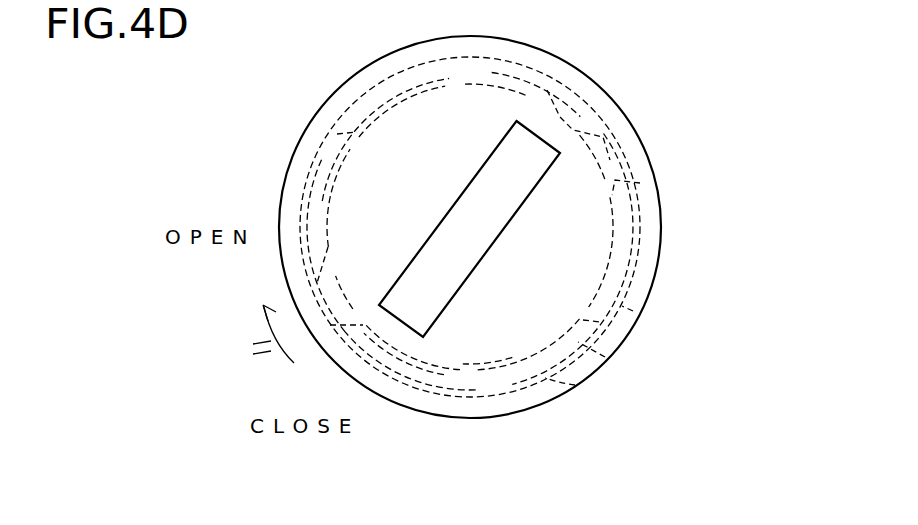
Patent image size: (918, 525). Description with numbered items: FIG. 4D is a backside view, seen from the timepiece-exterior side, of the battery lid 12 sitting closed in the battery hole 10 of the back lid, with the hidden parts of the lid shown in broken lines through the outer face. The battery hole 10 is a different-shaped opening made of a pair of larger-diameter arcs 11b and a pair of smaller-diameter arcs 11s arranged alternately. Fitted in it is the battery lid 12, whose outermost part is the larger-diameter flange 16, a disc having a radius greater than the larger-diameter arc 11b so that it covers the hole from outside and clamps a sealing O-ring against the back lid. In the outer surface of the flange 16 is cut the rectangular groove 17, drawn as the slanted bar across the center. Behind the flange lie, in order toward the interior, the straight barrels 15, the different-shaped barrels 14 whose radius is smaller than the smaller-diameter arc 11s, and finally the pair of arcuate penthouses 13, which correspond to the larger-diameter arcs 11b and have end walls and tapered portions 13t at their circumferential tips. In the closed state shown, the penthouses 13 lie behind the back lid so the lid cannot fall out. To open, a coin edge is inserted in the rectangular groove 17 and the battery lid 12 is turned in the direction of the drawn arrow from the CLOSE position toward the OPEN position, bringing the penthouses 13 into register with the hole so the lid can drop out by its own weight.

The battery hole 10 is at (538, 223).
The smaller-diameter arcs 11s is at (603, 137).
The larger-diameter arcs 11b is at (655, 175).
The battery lid 12 is at (334, 102).
The arcuate penthouses 13 is at (547, 90).
The tapered portions 13t is at (477, 73).
The different-shaped barrels 14 is at (575, 385).
The straight barrels 15 is at (605, 357).
The larger-diameter flange 16 is at (633, 311).
The rectangular groove 17 is at (453, 215).